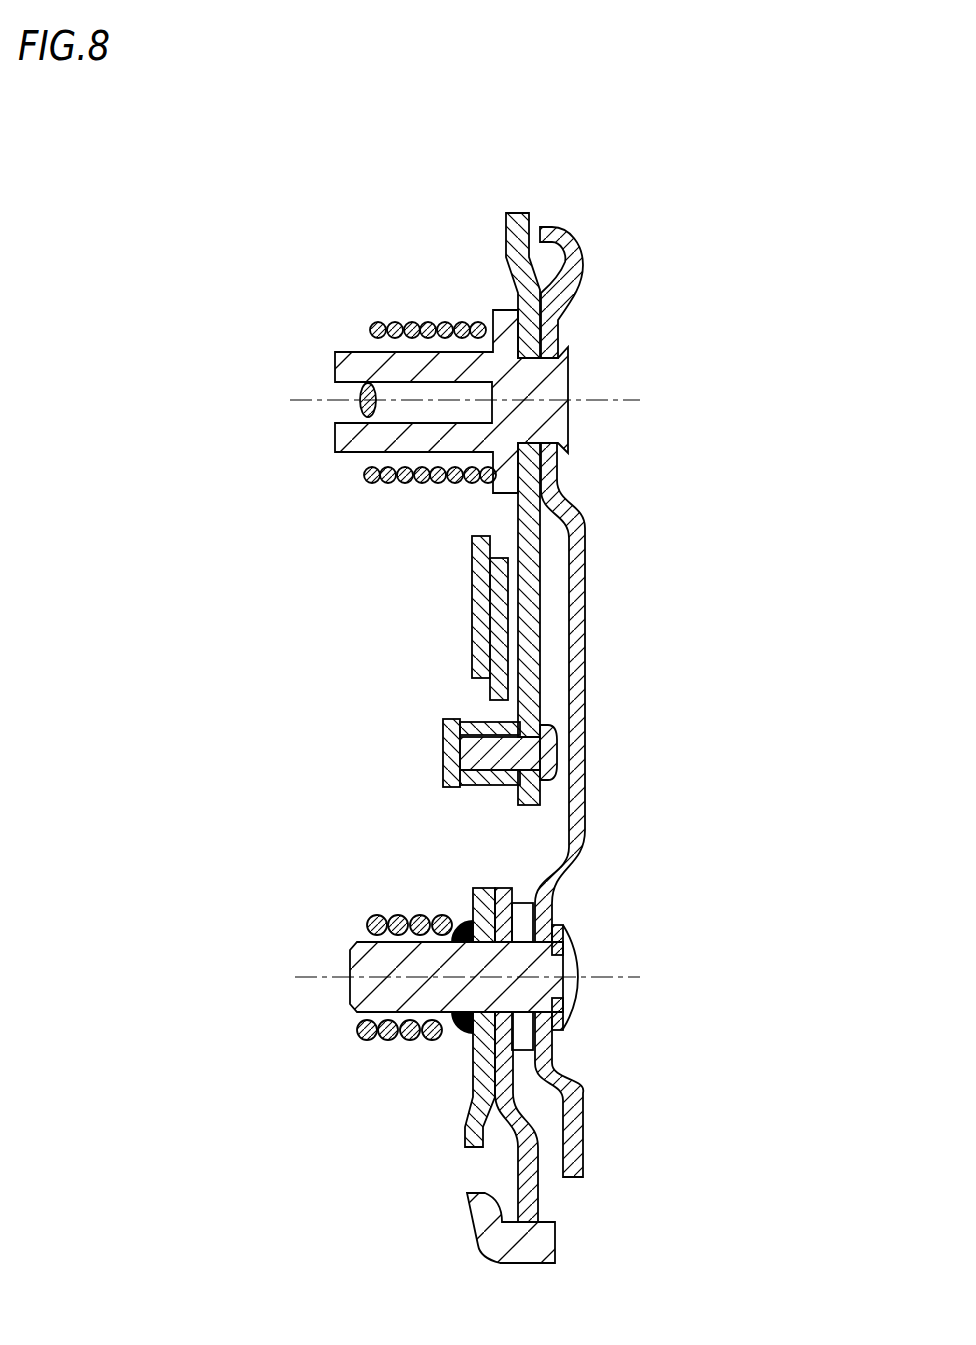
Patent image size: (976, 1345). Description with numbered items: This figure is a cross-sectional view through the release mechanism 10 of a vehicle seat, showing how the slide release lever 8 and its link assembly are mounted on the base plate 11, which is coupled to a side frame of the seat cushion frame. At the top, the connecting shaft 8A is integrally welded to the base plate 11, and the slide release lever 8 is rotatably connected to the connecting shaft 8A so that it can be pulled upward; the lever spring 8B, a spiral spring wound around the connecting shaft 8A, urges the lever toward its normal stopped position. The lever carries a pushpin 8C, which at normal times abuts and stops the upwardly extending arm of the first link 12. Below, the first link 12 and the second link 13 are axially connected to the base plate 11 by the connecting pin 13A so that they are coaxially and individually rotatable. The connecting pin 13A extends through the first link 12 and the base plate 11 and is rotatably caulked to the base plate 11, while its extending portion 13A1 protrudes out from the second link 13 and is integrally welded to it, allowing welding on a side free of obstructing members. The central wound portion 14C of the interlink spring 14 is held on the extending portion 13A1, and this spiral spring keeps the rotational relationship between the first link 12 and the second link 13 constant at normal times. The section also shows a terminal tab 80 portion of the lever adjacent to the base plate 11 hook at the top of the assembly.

The release mechanism 10 is at (675, 174).
The terminal tab of core 80 is at (515, 215).
The slide release lever 8 is at (532, 592).
The connecting shaft 8A is at (548, 380).
The lever spring 8B is at (408, 318).
The pushpin 8C is at (467, 752).
The base plate 11 is at (588, 687).
The first link 12 is at (527, 1118).
The second link 13 is at (475, 1080).
The connecting pin 13A is at (537, 985).
The extending portion 13A1 is at (373, 965).
The interlink spring 14 is at (380, 939).
The central wound portion 14C is at (375, 918).